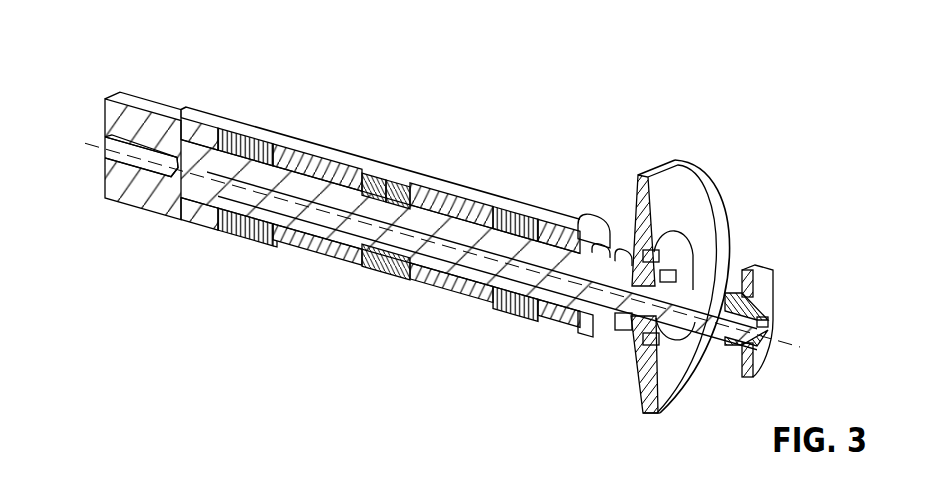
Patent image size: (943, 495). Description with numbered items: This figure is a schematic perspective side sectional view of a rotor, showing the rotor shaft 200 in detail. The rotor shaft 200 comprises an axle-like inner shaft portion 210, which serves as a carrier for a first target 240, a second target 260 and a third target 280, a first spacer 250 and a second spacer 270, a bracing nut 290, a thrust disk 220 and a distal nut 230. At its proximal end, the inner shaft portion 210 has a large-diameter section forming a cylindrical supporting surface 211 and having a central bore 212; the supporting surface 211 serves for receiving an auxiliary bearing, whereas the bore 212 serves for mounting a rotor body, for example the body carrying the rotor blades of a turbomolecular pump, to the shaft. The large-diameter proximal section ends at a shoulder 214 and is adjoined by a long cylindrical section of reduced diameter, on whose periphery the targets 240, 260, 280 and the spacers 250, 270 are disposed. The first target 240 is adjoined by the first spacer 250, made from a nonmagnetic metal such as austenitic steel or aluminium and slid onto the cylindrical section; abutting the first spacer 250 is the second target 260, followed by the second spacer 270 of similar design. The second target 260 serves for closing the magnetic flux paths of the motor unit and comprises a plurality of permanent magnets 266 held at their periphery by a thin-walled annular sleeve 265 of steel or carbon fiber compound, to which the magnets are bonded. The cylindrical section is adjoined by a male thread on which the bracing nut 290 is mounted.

The rotor shaft 200 is at (251, 103).
The inner shaft portion 210 is at (138, 187).
The cylindrical supporting surface 211 is at (160, 130).
The central bore 212 is at (104, 141).
The shoulder 214 is at (217, 209).
The thrust disk 220 is at (640, 208).
The distal nut 230 is at (768, 287).
The first target 240 is at (231, 236).
The first spacer 250 is at (303, 244).
The second target 260 is at (383, 268).
The sleeve 265 is at (363, 169).
The permanent magnets 266 is at (392, 178).
The second spacer 270 is at (445, 289).
The third target 280 is at (508, 313).
The bracing nut 290 is at (560, 318).